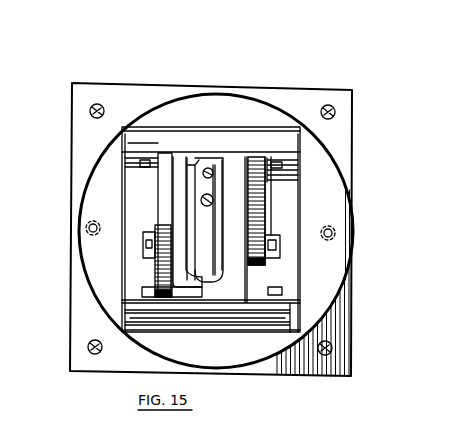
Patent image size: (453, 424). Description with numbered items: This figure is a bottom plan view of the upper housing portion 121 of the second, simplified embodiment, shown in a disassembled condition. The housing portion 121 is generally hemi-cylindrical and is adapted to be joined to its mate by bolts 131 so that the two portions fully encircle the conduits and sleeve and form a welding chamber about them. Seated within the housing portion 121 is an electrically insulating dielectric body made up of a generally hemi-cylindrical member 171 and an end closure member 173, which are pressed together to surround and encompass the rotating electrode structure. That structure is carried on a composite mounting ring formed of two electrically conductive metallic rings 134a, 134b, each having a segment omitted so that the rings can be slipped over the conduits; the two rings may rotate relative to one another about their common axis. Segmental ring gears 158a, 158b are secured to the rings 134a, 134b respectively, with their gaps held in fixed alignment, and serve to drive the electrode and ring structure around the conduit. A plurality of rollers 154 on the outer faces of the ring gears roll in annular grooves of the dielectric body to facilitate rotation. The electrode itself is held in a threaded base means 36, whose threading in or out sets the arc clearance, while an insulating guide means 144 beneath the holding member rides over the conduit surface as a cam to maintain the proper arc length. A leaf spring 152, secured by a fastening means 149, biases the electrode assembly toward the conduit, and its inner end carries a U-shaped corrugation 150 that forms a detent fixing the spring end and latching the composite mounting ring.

The workpiece housing portion 121 is at (163, 86).
The bolts 131 is at (90, 111).
The end closure member 173 is at (296, 138).
The hemi-cylindrical member 171 is at (233, 137).
The insulating guide means 144 is at (180, 174).
The base means 36 is at (225, 155).
The fastening means 149 is at (200, 198).
The leaf spring 152 is at (208, 225).
The segmental ring gear 158b is at (157, 268).
The segmental ring gear 158a is at (264, 204).
The metallic ring 134a is at (265, 213).
The metallic ring 134b is at (192, 292).
The rollers 154 is at (262, 259).
The U-shaped corrugation 150 is at (219, 258).